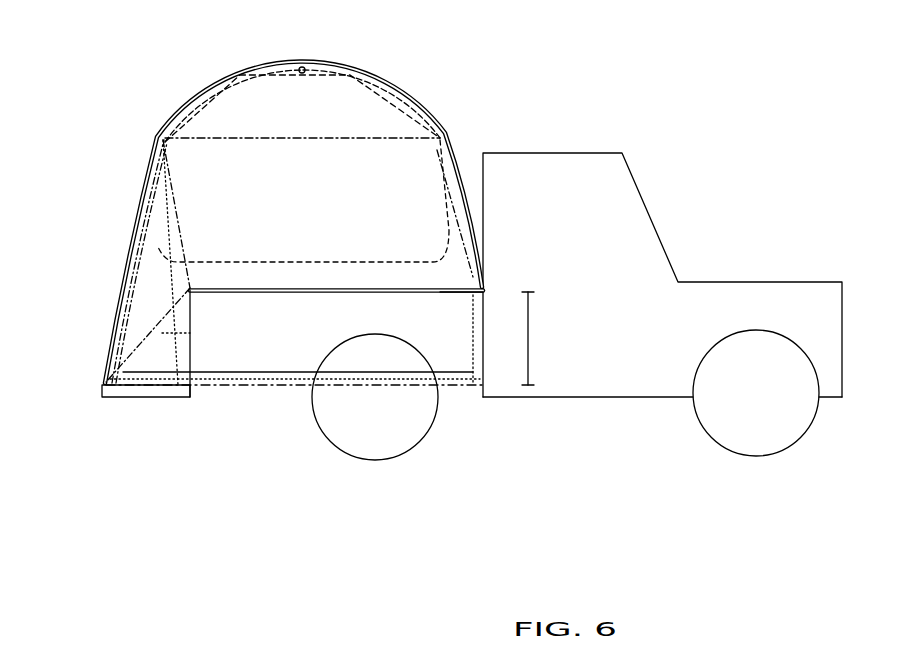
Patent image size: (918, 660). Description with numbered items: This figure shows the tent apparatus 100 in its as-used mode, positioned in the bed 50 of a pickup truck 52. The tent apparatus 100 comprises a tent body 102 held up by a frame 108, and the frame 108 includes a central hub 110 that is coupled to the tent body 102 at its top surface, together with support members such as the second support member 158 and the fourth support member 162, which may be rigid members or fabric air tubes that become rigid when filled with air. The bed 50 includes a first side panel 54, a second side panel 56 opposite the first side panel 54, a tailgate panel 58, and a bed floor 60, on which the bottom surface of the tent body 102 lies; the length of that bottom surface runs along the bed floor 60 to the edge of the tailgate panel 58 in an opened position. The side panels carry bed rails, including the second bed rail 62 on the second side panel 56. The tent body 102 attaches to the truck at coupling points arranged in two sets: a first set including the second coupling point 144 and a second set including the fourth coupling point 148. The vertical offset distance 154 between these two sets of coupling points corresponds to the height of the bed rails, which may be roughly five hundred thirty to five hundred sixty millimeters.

The bed 50 is at (232, 397).
The pickup truck 52 is at (641, 183).
The first side panel 54 is at (289, 283).
The second side panel 56 is at (478, 380).
The tailgate panel 58 is at (127, 393).
The bed floor 60 is at (237, 377).
The second bed rail 62 is at (455, 291).
The tent apparatus 100 is at (385, 63).
The tent body 102 is at (233, 85).
The frame 108 is at (447, 131).
The central hub 110 is at (302, 62).
The second coupling point 144 is at (482, 285).
The fourth coupling point 148 is at (105, 383).
The vertical offset distance 154 is at (530, 330).
The second support member 158 is at (422, 107).
The fourth support member 162 is at (182, 108).